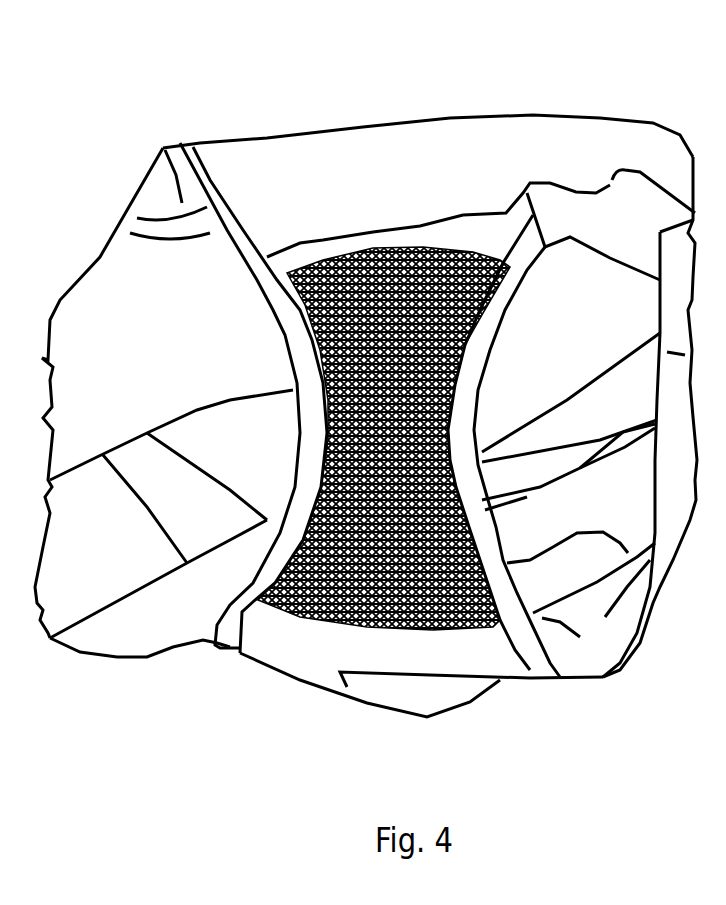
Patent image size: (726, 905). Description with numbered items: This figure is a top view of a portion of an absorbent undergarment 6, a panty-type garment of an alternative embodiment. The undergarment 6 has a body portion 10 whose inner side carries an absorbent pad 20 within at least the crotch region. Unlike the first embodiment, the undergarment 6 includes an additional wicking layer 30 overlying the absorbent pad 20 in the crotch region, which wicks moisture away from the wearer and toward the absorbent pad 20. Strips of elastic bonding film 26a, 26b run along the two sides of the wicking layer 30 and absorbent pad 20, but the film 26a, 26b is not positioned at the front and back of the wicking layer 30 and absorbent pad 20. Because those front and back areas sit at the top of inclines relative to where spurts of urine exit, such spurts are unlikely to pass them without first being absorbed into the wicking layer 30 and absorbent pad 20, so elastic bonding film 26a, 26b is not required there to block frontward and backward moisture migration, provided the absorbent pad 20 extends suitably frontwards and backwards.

The absorbent undergarment 6 is at (438, 105).
The body portion 10 is at (251, 157).
The wicking layer 30 is at (378, 247).
The elastic bonding film 26a is at (476, 358).
The elastic bonding film 26b is at (290, 345).
The absorbent pad 20 is at (303, 617).